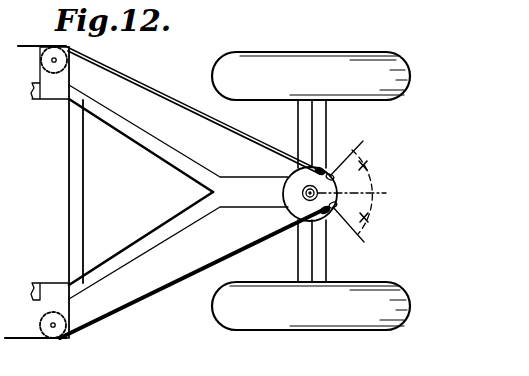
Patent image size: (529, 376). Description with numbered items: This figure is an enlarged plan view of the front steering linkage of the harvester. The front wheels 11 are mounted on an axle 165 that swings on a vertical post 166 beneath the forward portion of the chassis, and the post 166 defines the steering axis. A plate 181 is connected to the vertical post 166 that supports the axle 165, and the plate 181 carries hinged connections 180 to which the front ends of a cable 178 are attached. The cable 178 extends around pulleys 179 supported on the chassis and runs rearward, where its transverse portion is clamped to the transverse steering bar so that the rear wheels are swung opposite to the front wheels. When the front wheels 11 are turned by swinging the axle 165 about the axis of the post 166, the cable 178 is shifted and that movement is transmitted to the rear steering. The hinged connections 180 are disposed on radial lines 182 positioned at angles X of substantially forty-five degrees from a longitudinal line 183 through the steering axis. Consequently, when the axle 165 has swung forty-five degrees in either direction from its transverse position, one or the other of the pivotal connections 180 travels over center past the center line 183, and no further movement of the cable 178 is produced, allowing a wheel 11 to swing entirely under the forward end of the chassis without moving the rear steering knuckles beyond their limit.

The front wheel 11 is at (303, 331).
The axle 165 is at (300, 224).
The vertical post 166 is at (293, 179).
The cable 178 is at (137, 298).
The pulley 179 is at (62, 338).
The hinged connection 180 is at (328, 167).
The plate 181 is at (290, 211).
The radial line 182 is at (364, 142).
The longitudinal line 183 is at (386, 193).